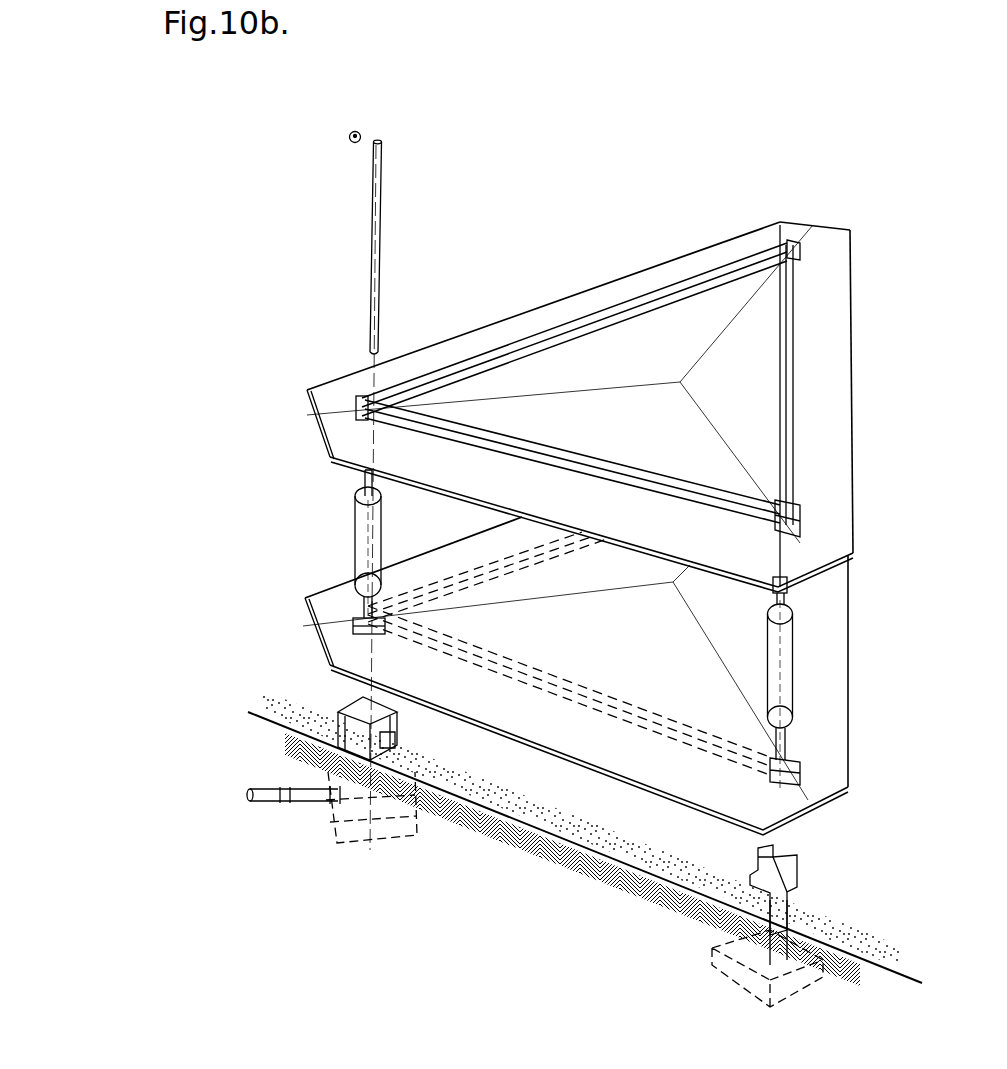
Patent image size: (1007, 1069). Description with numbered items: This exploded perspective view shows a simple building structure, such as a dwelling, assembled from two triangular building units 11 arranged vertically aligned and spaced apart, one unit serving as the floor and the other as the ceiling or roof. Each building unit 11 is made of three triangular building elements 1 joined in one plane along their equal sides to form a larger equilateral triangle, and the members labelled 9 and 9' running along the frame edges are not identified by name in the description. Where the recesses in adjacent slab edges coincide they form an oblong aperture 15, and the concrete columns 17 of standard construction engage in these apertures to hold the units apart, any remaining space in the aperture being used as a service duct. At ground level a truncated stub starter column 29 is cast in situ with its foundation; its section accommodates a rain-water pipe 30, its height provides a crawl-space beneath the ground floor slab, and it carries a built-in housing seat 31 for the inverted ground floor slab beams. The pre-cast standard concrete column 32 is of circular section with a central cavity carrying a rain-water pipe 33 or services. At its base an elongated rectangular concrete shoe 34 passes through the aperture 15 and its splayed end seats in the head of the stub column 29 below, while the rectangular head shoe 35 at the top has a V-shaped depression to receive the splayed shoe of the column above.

The building element 1 is at (445, 565).
The strut / rail 9 is at (571, 511).
The vertical connecting strut 9' is at (776, 356).
The building unit 11 is at (855, 355).
The oblong aperture 15 is at (797, 540).
The concrete column 17 is at (800, 660).
The stub starter column 29 is at (800, 876).
The rain-water pipe 30 is at (313, 793).
The housing seat 31 is at (398, 742).
The standard concrete column 32 is at (362, 556).
The rain-water pipe 33 is at (378, 262).
The concrete shoe 34 is at (345, 626).
The head shoe 35 is at (360, 488).